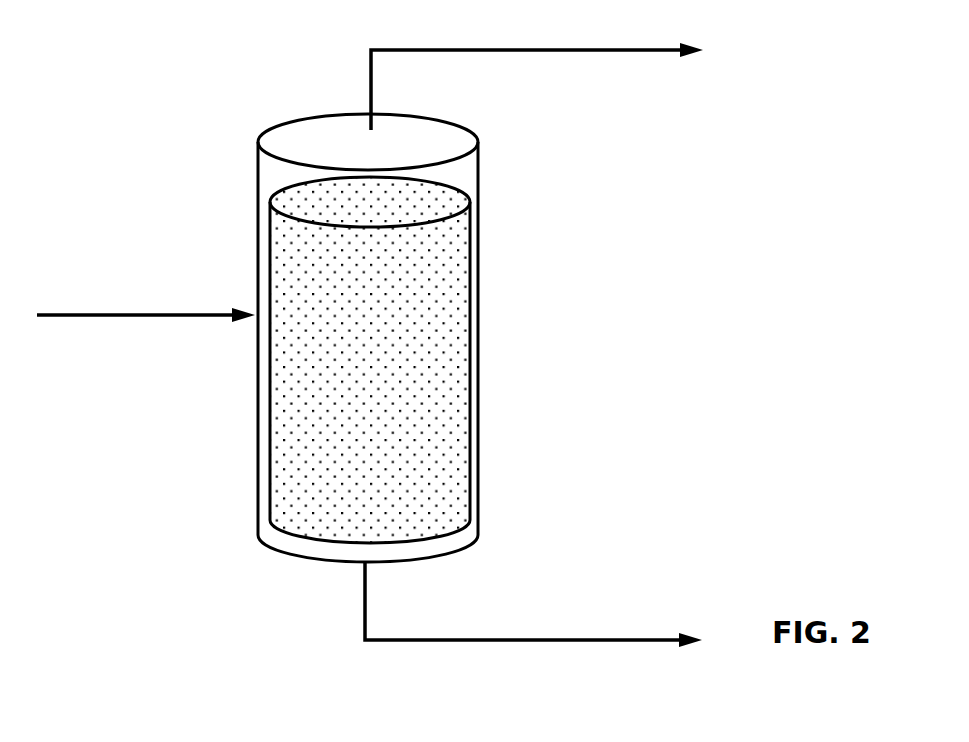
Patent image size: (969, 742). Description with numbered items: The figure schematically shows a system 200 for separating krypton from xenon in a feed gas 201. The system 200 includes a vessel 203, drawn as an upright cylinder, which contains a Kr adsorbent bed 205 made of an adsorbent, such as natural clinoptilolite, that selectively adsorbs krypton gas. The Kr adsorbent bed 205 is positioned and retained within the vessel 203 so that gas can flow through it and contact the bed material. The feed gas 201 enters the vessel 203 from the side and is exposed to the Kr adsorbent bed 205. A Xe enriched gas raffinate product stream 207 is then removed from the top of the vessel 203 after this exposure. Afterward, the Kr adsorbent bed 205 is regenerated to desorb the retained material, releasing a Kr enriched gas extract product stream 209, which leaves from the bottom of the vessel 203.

The system 200 is at (222, 80).
The feed gas 201 is at (128, 312).
The vessel 203 is at (478, 252).
The Kr adsorbent bed 205 is at (445, 337).
The Xe enriched gas raffinate product stream 207 is at (577, 47).
The Kr enriched gas extract product stream 209 is at (572, 637).